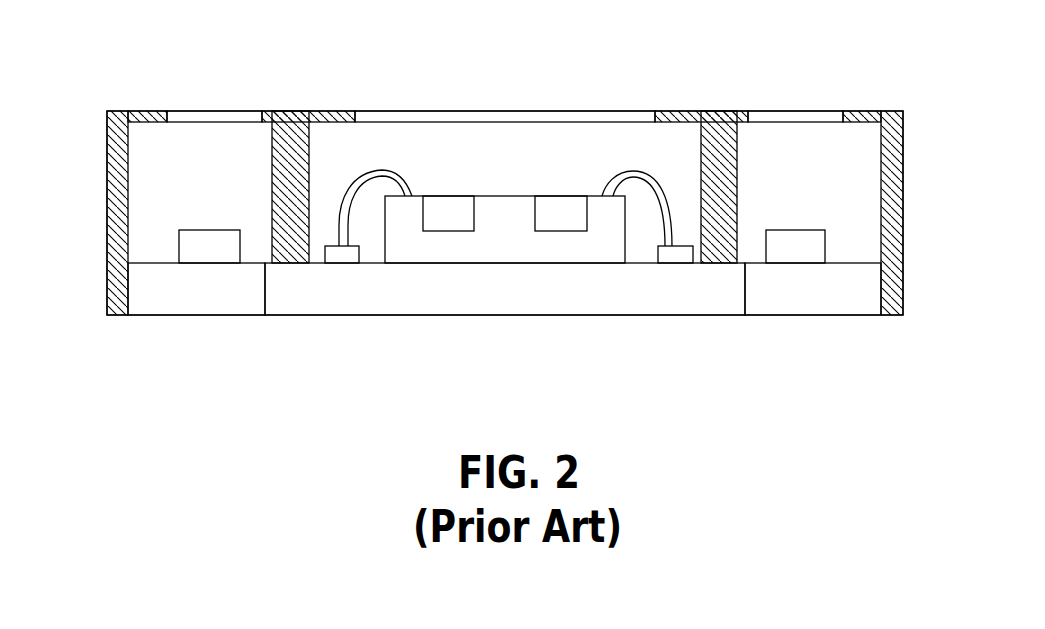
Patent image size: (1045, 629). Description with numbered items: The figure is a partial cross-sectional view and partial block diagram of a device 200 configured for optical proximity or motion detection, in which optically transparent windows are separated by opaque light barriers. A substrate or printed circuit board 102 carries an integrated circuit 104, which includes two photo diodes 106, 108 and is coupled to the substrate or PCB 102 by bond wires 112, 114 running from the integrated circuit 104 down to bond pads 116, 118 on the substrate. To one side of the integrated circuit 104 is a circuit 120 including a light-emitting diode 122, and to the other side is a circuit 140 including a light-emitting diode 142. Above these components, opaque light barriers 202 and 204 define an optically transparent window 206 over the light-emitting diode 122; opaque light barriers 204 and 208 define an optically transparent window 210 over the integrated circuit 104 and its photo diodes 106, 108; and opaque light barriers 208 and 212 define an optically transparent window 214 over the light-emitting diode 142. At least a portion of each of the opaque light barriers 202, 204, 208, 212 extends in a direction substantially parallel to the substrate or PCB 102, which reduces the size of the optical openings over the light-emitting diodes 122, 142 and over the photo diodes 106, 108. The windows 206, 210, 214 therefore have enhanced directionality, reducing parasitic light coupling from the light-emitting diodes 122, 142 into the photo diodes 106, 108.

The device 200 is at (169, 37).
The substrate or printed circuit board 102 is at (387, 317).
The integrated circuit 104 is at (521, 196).
The photo diode 106 is at (427, 196).
The photo diode 108 is at (578, 196).
The bond wire 112 is at (372, 175).
The bond wire 114 is at (627, 172).
The bond pad 116 is at (353, 265).
The bond pad 118 is at (675, 265).
The circuit 120 is at (247, 318).
The light-emitting diode 122 is at (213, 230).
The circuit 140 is at (795, 317).
The light-emitting diode 142 is at (812, 230).
The opaque light barrier 202 is at (108, 160).
The opaque light barrier 204 is at (275, 152).
The optically transparent window 206 is at (208, 111).
The opaque light barrier 208 is at (702, 111).
The optically transparent window 210 is at (502, 110).
The opaque light barrier 212 is at (893, 110).
The optically transparent window 214 is at (808, 110).